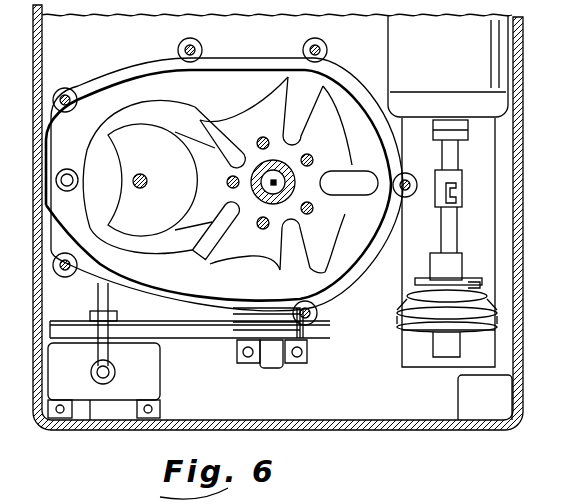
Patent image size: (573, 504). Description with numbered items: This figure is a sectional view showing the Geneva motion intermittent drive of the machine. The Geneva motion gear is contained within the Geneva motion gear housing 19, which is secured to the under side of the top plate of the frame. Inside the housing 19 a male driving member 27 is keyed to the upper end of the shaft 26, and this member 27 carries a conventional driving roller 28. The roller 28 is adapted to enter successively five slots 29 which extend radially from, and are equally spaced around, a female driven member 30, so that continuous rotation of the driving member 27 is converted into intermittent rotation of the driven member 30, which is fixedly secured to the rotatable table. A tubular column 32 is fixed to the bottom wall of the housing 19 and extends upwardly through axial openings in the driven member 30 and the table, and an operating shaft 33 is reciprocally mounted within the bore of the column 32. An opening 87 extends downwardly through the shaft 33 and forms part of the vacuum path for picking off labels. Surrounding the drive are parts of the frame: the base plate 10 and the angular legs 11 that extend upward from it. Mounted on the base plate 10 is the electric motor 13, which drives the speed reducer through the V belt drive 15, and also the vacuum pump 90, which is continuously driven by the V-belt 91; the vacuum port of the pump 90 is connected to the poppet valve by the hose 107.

The base plate 10 is at (278, 217).
The legs 11 is at (485, 397).
The electric motor 13 is at (448, 66).
The V belt drive 15 is at (382, 278).
The Geneva motion gear housing 19 is at (231, 181).
The shaft 26 is at (145, 188).
The male driving member 27 is at (161, 180).
The driving roller 28 is at (80, 176).
The slots 29 is at (322, 183).
The female driven member 30 is at (259, 122).
The tubular column 32 is at (338, 150).
The operating shaft 33 is at (343, 218).
The opening 87 is at (275, 190).
The vacuum pump 90 is at (104, 381).
The V-belt 91 is at (196, 332).
The hose 107 is at (98, 293).